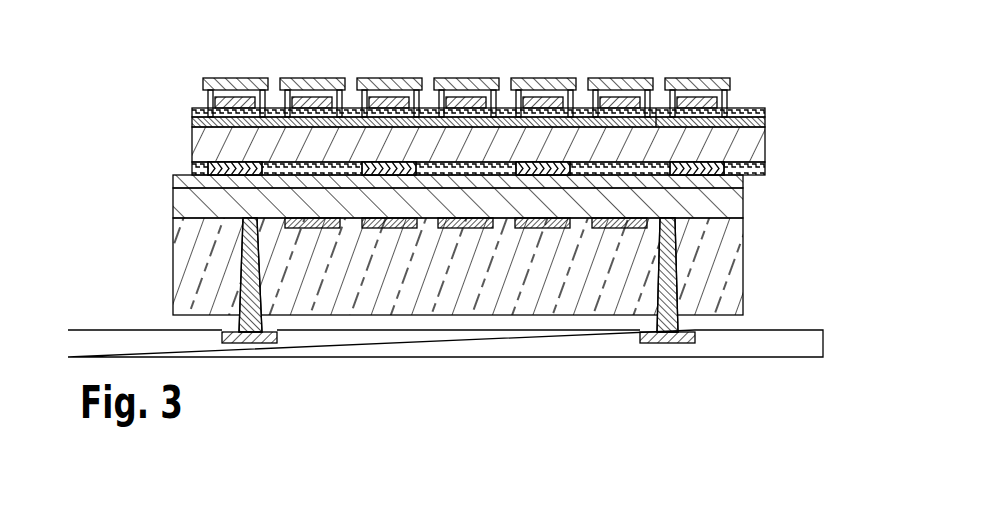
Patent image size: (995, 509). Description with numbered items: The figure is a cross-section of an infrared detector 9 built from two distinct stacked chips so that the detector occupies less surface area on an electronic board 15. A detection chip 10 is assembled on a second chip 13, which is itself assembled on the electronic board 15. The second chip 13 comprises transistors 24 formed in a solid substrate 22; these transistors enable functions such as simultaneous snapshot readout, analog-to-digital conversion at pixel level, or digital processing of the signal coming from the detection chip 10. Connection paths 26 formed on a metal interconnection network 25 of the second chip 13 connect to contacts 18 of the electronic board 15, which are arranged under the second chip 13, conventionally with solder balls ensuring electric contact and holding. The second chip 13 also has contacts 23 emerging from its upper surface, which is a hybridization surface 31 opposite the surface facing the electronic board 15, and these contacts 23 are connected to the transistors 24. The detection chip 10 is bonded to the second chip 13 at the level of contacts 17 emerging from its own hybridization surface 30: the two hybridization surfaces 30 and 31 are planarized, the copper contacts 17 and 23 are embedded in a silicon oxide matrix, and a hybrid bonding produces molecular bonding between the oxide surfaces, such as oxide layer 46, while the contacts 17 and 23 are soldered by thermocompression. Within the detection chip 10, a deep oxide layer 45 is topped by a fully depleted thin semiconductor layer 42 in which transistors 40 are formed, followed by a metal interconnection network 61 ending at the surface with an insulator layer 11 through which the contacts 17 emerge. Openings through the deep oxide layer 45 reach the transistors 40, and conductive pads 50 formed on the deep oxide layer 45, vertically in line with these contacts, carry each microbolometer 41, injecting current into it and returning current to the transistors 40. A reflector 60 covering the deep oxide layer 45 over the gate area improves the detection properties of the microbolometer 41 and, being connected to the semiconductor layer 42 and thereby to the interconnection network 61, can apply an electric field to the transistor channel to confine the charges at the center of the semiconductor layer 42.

The infrared detector 9 is at (797, 31).
The detection chip 10 is at (496, 89).
The insulator layer 11 is at (193, 167).
The second chip 13 is at (480, 315).
The electronic board 15 is at (747, 348).
The contacts 17 is at (227, 167).
The contacts 18 is at (670, 345).
The solid substrate 22 is at (188, 283).
The contacts 23 is at (718, 178).
The transistors 24 is at (305, 229).
The metal interconnection network 25 is at (182, 203).
The connection paths 26 is at (245, 344).
The hybridization surface 30 is at (491, 152).
The hybridization surface 31 is at (435, 196).
The transistors 40 is at (612, 105).
The microbolometer 41 is at (335, 79).
The semiconductor layer 42 is at (193, 122).
The deep oxide layer 45 is at (266, 97).
The oxide layers 46 is at (655, 165).
The conductive pads 50 is at (529, 98).
The reflector 60 is at (389, 97).
The metal interconnection network 61 is at (752, 148).